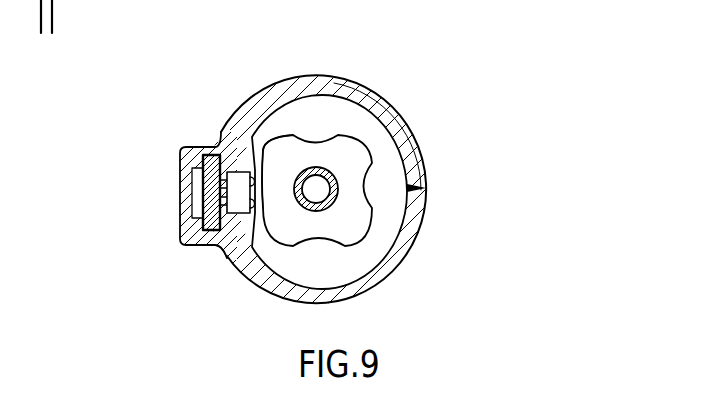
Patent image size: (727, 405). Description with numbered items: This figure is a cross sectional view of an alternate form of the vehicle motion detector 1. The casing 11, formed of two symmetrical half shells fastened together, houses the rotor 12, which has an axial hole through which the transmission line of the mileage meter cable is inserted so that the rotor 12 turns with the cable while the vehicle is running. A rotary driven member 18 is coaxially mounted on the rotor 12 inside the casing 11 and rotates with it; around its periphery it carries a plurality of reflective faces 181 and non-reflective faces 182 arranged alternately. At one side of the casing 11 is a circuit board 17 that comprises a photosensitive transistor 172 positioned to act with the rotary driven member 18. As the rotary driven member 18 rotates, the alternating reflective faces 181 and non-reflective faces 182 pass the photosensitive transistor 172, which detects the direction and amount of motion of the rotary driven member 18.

The vehicle motion detector 1 is at (440, 92).
The casing 11 is at (425, 170).
The rotor 12 is at (333, 205).
The circuit board 17 is at (207, 190).
The photosensitive transistor 172 is at (219, 247).
The rotary driven member 18 is at (318, 150).
The reflective faces 181 is at (283, 138).
The non-reflective faces 182 is at (263, 167).